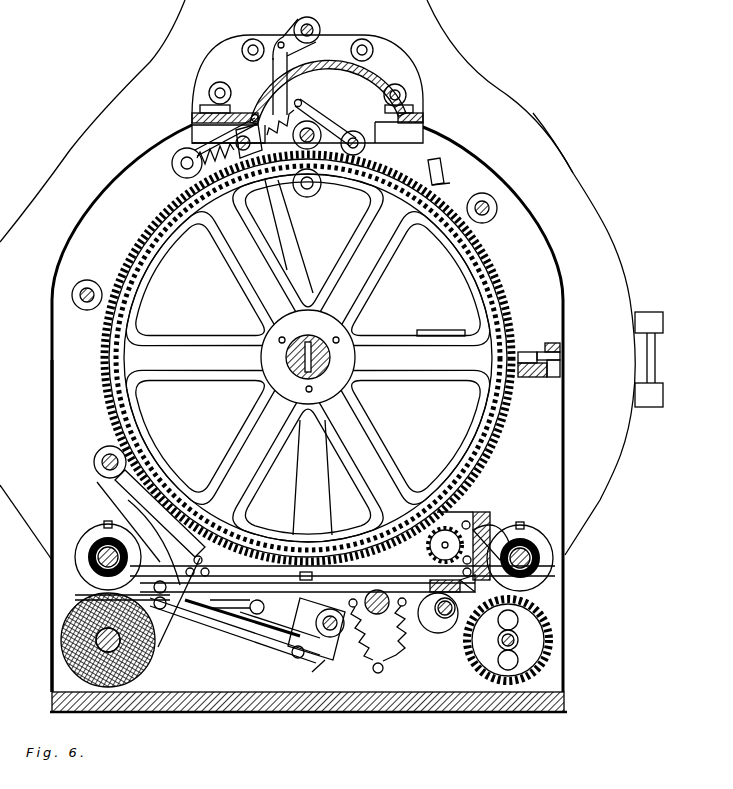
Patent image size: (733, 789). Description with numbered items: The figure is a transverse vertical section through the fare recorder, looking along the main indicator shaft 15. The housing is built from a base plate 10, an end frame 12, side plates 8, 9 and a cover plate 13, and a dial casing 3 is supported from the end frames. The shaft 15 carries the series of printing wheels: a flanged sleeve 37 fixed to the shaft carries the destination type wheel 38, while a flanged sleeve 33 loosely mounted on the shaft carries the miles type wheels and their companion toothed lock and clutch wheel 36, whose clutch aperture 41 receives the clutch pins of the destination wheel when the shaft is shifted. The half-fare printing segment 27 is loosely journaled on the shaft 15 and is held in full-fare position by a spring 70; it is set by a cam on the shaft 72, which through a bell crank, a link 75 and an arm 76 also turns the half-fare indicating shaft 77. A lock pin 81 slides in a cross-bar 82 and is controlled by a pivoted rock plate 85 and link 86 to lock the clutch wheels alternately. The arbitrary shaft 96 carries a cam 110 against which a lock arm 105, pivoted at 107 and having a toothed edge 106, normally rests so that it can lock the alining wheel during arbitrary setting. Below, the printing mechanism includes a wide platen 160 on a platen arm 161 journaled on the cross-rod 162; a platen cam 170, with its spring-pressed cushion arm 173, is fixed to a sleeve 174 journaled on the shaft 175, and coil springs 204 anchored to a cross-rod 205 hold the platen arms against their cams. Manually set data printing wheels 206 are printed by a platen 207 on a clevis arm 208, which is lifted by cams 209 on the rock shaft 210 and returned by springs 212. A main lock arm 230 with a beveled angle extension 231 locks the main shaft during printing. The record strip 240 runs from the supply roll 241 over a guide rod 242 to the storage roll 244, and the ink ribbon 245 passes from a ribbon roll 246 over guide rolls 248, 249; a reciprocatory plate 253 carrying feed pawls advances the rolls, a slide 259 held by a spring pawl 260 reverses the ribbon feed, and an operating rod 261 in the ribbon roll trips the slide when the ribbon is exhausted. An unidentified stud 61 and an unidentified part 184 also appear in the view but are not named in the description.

The dial casing 3 is at (545, 136).
The side plate 8 is at (51, 292).
The side plate 9 is at (70, 353).
The base plate 10 is at (50, 483).
The end frame 12 is at (522, 152).
The cover plate 13 is at (360, 92).
The main indicator shaft 15 is at (332, 358).
The half-fare printing segment 27 is at (298, 508).
The flanged sleeve 33 is at (320, 368).
The lock and clutch wheel 36 is at (140, 432).
The flanged sleeve 37 is at (302, 345).
The destination type wheel 38 is at (118, 405).
The clutch aperture 41 is at (458, 254).
The stud 61 is at (96, 456).
The spring 70 is at (186, 160).
The shaft 72 is at (260, 125).
The link 75 is at (290, 60).
The arm 76 is at (290, 32).
The half-fare indicating shaft 77 is at (320, 26).
The lock pin 81 is at (550, 377).
The cross-bar 82 is at (530, 377).
The rock plate 85 is at (560, 356).
The link 86 is at (550, 343).
The arbitrary shaft 96 is at (318, 118).
The lock arm 105 is at (432, 162).
The toothed edge 106 is at (442, 180).
The pivot 107 is at (365, 144).
The cam 110 is at (312, 137).
The wide platen 160 is at (296, 572).
The platen arm 161 is at (350, 602).
The cross-rod 162 is at (372, 596).
The platen cam 170 is at (334, 626).
The cushion arm 173 is at (260, 640).
The sleeve 174 is at (312, 672).
The shaft 175 is at (306, 660).
The block 184 is at (536, 350).
The coil spring 204 is at (360, 648).
The cross-rod 205 is at (372, 672).
The printing wheels 206 is at (428, 549).
The printing platen 207 is at (430, 574).
The clevis arm 208 is at (428, 586).
The cam 209 is at (448, 632).
The rock shaft 210 is at (436, 628).
The spring 212 is at (388, 648).
The main lock arm 230 is at (158, 532).
The angle extension 231 is at (110, 488).
The record strip 240 is at (160, 650).
The supply roll 241 is at (92, 612).
The guide rod 242 is at (208, 571).
The storage roll 244 is at (532, 612).
The ink ribbon 245 is at (158, 570).
The ribbon roll 246 is at (96, 552).
The guide roll 248 is at (197, 560).
The guide roll 249 is at (492, 530).
The reciprocatory plate 253 is at (196, 626).
The slide 259 is at (172, 604).
The spring pawl 260 is at (240, 612).
The operating rod 261 is at (96, 540).